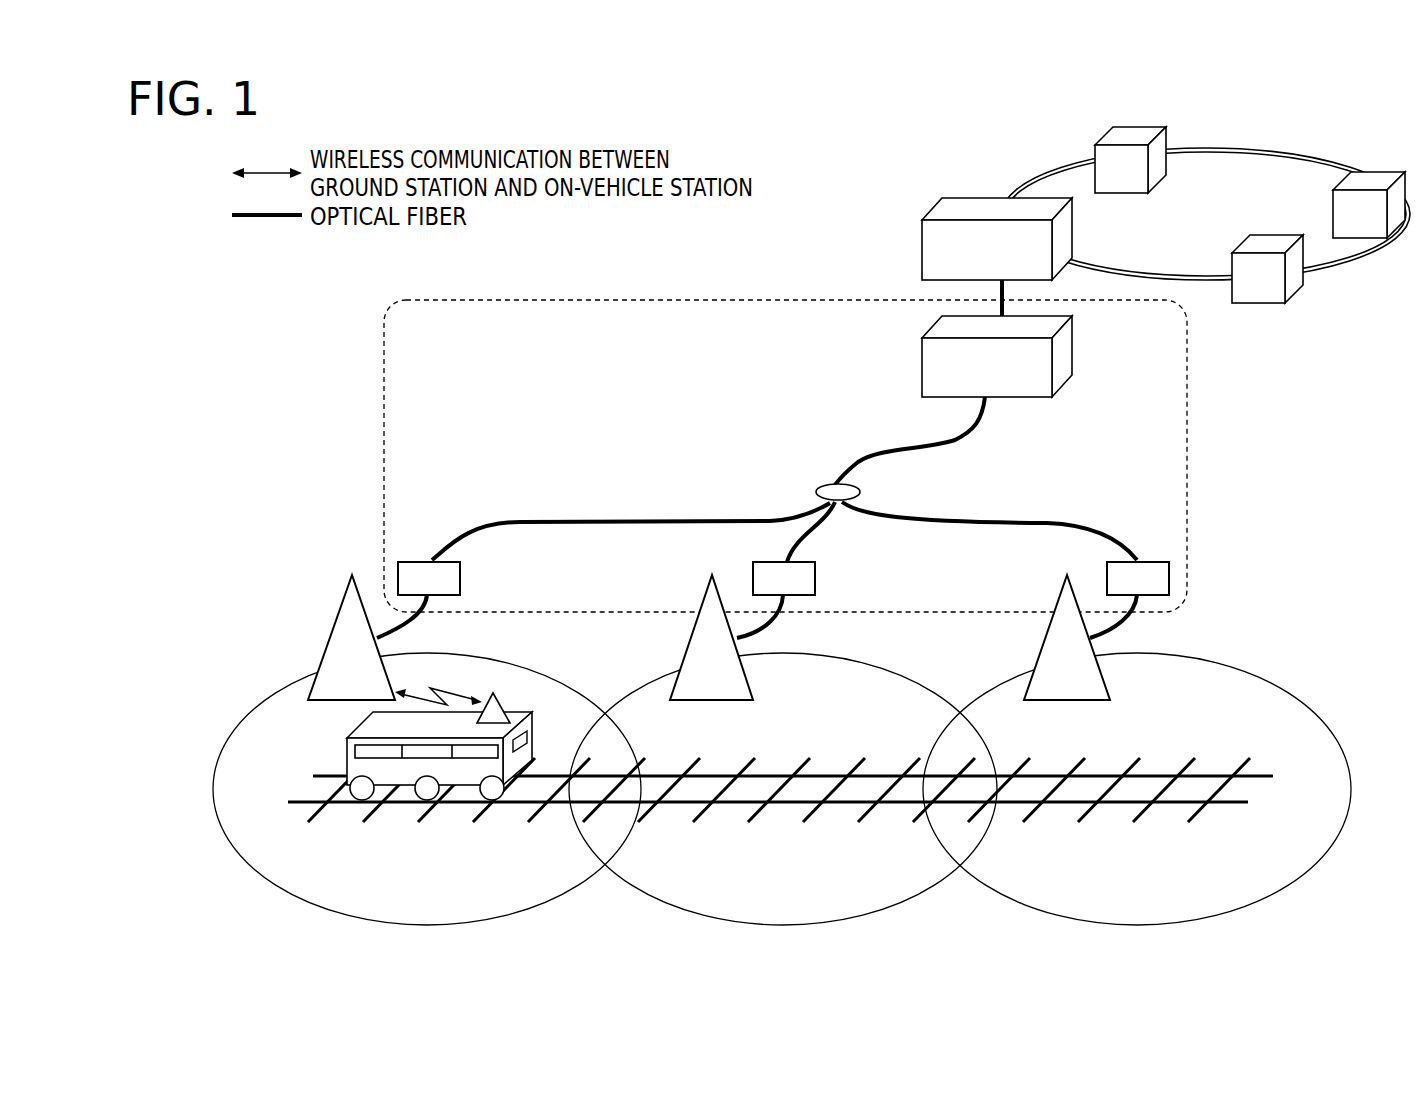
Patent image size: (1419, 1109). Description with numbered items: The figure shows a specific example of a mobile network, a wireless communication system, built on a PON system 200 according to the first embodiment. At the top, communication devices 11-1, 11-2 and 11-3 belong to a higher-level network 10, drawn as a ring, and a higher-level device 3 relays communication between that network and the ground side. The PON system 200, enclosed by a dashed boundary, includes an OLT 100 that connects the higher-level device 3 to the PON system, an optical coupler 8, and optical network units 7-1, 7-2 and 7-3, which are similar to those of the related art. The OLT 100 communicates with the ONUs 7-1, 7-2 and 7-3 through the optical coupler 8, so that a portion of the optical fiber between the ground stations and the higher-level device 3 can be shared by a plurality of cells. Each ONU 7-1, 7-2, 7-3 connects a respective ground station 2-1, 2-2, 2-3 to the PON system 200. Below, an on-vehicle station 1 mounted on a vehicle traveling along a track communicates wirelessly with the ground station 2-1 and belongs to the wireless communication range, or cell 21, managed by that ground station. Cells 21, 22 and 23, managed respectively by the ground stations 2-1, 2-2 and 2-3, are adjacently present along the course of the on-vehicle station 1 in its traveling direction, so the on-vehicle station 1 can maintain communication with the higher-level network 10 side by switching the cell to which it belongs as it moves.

The on-vehicle station 1 is at (495, 714).
The ground station 2-1 is at (330, 642).
The ground station 2-2 is at (690, 640).
The ground station 2-3 is at (1043, 640).
The higher-level device 3 is at (923, 248).
The optical network unit (ONU) 7-1 is at (460, 577).
The optical network unit (ONU) 7-2 is at (817, 577).
The optical network unit (ONU) 7-3 is at (1170, 578).
The optical coupler 8 is at (827, 483).
The higher-level network 10 is at (1232, 155).
The communication device 11-1 is at (1133, 123).
The communication device 11-2 is at (1257, 305).
The communication device 11-3 is at (1375, 172).
The wireless communication range (cell) 21 is at (427, 900).
The cell 22 is at (783, 900).
The cell 23 is at (1137, 900).
The OLT (optical terminal station device) 100 is at (923, 362).
The PON system 200 is at (578, 300).